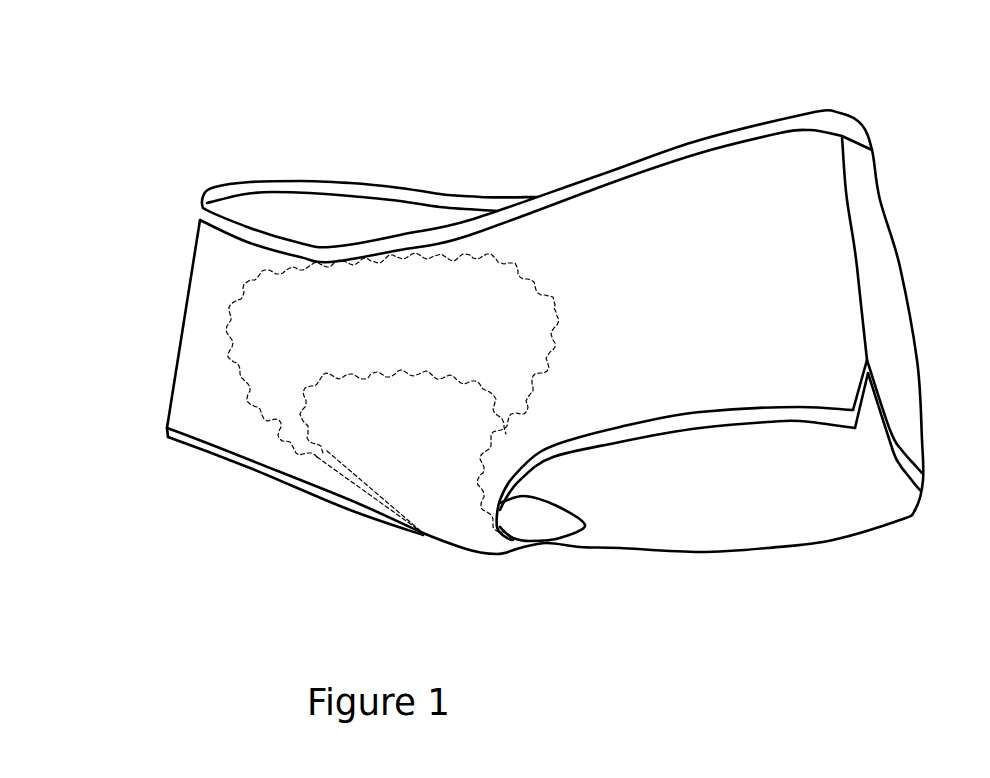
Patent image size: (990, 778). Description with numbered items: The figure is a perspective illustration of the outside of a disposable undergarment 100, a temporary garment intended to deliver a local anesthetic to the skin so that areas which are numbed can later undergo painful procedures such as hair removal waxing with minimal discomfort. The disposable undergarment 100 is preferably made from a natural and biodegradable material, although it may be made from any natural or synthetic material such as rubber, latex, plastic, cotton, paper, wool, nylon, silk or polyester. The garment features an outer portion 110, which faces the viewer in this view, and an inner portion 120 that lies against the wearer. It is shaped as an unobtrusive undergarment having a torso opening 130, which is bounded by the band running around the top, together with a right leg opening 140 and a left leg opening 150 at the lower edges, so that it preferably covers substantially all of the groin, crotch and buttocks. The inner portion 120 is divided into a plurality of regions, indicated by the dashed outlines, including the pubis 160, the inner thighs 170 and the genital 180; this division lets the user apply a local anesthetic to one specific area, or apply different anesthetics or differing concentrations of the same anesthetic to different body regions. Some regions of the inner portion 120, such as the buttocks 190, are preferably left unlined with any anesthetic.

The disposable undergarment 100 is at (240, 153).
The outer portion 110 is at (192, 408).
The inner portion 120 is at (837, 493).
The torso opening 130 is at (473, 153).
The right leg opening 140 is at (202, 473).
The left leg opening 150 is at (658, 585).
The pubis 160 is at (263, 322).
The inner thighs 170 is at (351, 482).
The genital 180 is at (427, 475).
The buttocks 190 is at (718, 468).